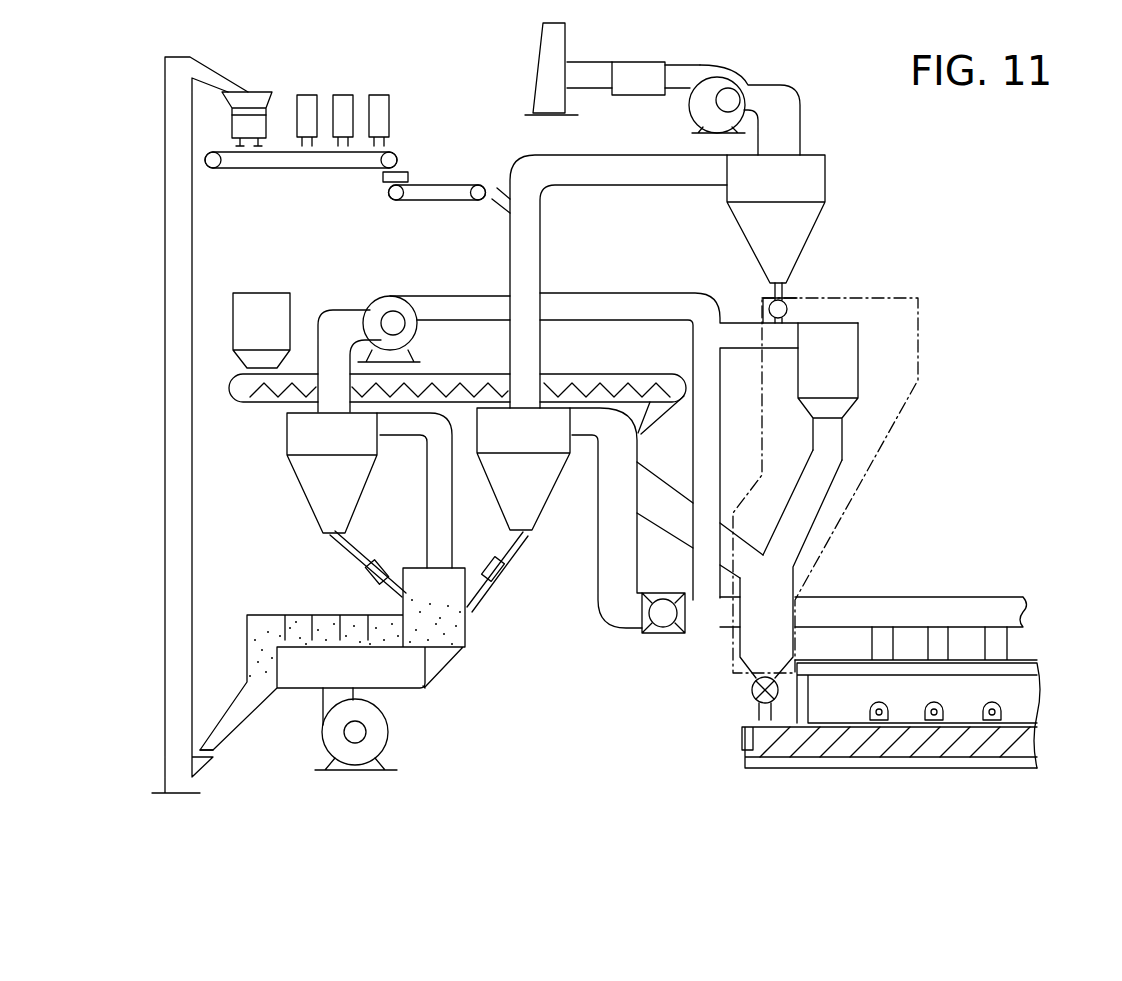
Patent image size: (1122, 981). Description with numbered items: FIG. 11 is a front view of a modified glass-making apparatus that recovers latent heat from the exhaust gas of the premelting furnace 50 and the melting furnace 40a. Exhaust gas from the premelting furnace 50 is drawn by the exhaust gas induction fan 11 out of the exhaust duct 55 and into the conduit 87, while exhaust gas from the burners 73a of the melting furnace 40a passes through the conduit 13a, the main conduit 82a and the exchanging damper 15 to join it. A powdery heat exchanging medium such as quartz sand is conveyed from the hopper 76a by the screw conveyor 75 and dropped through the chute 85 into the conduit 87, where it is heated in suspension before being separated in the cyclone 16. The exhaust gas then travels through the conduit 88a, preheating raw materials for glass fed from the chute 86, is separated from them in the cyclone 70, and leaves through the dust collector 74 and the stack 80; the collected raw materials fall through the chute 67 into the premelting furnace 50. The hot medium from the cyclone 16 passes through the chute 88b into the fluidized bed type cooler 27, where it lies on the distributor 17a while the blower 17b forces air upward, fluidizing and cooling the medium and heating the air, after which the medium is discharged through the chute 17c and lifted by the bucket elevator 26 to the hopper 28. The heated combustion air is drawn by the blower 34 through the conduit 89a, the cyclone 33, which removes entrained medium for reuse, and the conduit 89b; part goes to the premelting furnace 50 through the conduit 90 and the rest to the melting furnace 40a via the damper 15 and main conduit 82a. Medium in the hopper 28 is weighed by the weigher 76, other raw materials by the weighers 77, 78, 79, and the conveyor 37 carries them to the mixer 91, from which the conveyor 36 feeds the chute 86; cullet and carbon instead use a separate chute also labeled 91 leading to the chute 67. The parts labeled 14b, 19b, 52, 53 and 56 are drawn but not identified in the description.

The exhaust gas induction fan 11 is at (725, 80).
The conduit 13a is at (880, 627).
The fan housing 14b is at (650, 633).
The exchanging damper 15 is at (668, 633).
The cyclone for heating the heat exchanging medium 16 is at (513, 508).
The distributor 17a is at (425, 680).
The blower 17b is at (392, 730).
The discharging chute 17c is at (240, 725).
The chute 19b is at (707, 450).
The bucket elevator 26 is at (190, 212).
The fluidized bed type cooler 27 is at (320, 613).
The hopper 28 is at (258, 92).
The cyclone 33 is at (287, 445).
The blower 34 is at (392, 300).
The conveyor 36 is at (440, 200).
The conveyor 37 is at (303, 168).
The melting furnace 40a is at (1090, 625).
The premelting furnace 50 is at (880, 437).
The cyclone separator 52 is at (850, 348).
The discharge duct 53 is at (812, 470).
The exhaust duct 55 is at (752, 532).
The valve 56 is at (755, 645).
The chute for feeding raw materials for glass 67 is at (790, 300).
The cyclone for preheating the raw materials for glass 70 is at (820, 175).
The burner 73a is at (888, 705).
The dust collector 74 is at (640, 95).
The screw conveyor 75 is at (470, 385).
The weigher 76 is at (255, 120).
The hopper 76a is at (262, 298).
The weigher 77 is at (305, 95).
The weigher 78 is at (343, 95).
The weigher 79 is at (379, 95).
The stack 80 is at (540, 62).
The main conduit 82a is at (903, 597).
The chute 85 is at (645, 428).
The chute 86 is at (505, 190).
The conduit 87 is at (607, 470).
The conduit 88a is at (542, 255).
The chute 88b is at (505, 558).
The conduit 89a is at (427, 525).
The conduit 89b is at (342, 315).
The conduit 90 is at (737, 348).
The mixer 91 is at (398, 172).